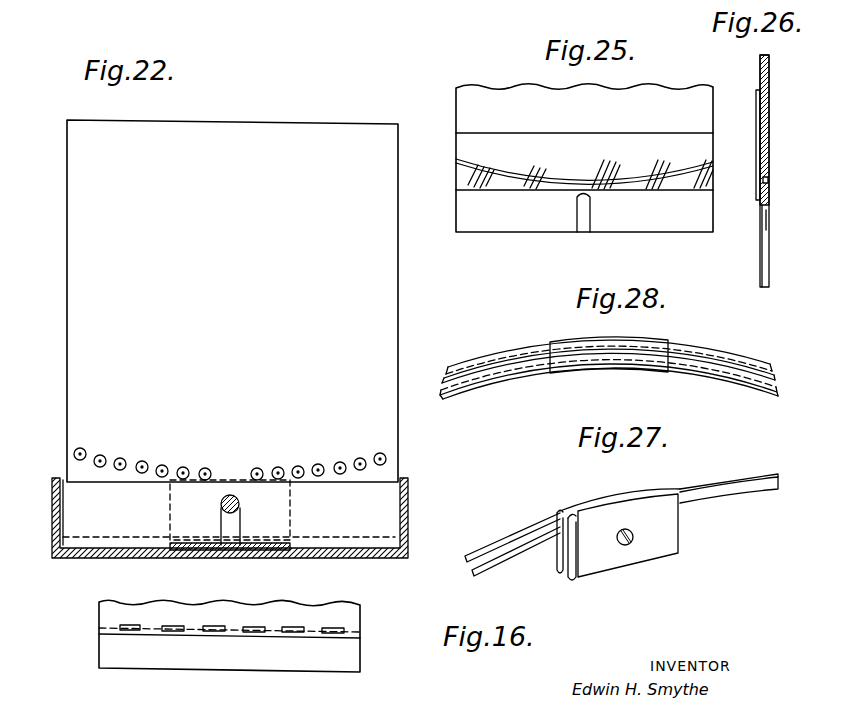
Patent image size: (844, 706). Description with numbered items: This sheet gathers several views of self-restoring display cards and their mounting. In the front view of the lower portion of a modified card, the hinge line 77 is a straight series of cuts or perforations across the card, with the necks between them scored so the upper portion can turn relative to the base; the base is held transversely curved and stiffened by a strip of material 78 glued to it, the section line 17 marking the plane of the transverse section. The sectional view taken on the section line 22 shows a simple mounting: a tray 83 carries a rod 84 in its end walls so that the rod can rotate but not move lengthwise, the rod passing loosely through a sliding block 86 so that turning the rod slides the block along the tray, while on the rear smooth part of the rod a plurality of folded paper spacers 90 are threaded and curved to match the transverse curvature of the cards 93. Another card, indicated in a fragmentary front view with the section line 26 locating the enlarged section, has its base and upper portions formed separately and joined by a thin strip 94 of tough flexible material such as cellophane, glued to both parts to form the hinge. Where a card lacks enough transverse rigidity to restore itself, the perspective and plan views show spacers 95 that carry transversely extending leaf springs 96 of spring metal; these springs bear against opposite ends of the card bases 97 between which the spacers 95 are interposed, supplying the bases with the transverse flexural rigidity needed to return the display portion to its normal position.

In FIG. 16, the section line 17- 17 is at (95, 632).
In FIG. 25, the section line 22- 22 is at (610, 0).
In FIG. 25, the section line 26- 26 is at (583, 262).
In FIG. 16, the hinge line 77 is at (333, 629).
In FIG. 16, the strip of material 78 is at (352, 660).
In FIG. 22, the tray 83 is at (53, 517).
In FIG. 22, the rod 84 is at (240, 505).
In FIG. 22, the sliding block 86 is at (312, 0).
In FIG. 22, the spacer 90 is at (188, 549).
In FIG. 22, the card 93 is at (78, 332).
In FIG. 25, the thin strip of tough flexible material 94 is at (462, 150).
In FIG. 26, the thin strip of tough flexible material 94 is at (757, 108).
In FIG. 22, the spacer 95 is at (234, 476).
In FIG. 28, the spacer 95 is at (560, 352).
In FIG. 27, the spacer 95 is at (588, 512).
In FIG. 28, the leaf spring 96 is at (502, 372).
In FIG. 27, the leaf spring 96 is at (520, 543).
In FIG. 28, the card base 97 is at (432, 381).